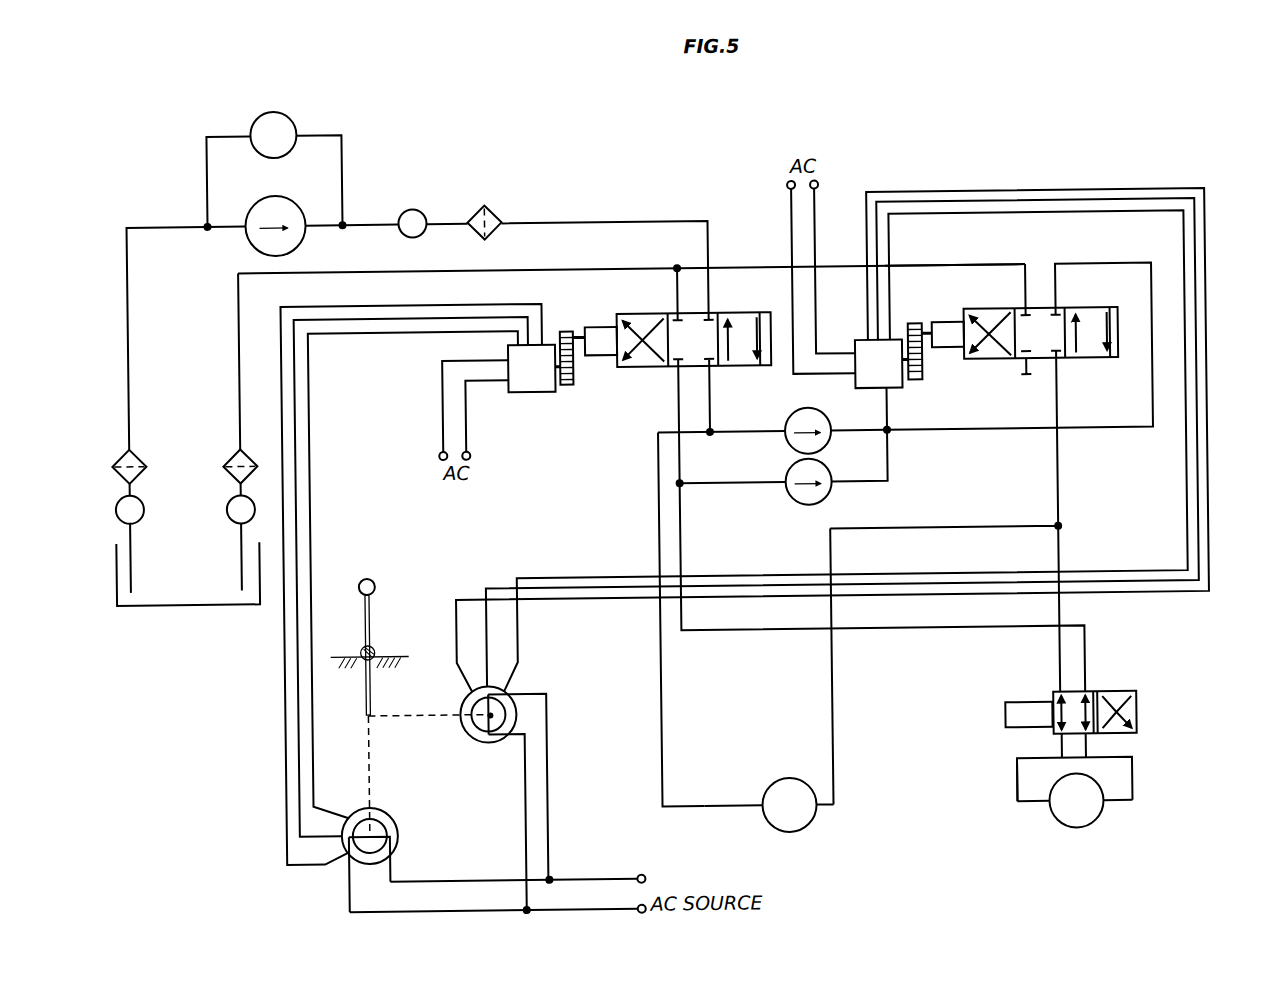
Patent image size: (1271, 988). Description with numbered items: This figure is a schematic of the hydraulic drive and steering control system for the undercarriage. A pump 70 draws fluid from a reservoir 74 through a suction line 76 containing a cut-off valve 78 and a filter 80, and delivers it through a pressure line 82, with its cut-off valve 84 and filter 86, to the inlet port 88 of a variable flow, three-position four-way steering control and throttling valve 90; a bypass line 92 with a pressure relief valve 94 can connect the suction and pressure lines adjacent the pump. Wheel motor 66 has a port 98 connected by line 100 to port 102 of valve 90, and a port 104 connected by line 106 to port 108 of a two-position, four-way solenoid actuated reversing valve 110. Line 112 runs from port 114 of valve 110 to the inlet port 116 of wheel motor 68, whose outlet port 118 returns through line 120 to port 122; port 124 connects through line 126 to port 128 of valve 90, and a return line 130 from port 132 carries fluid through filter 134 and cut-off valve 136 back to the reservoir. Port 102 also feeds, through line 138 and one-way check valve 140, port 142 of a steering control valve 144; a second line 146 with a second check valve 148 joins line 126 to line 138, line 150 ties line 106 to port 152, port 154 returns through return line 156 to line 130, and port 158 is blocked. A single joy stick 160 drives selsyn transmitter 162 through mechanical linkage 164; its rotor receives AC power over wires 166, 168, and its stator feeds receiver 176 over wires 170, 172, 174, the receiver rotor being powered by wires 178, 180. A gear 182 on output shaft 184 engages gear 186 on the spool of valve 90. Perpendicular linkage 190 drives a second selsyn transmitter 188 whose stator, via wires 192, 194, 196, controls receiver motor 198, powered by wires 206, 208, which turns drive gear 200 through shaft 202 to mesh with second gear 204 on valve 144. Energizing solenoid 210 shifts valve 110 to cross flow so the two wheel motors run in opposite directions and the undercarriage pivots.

The wheel motor 66 is at (787, 834).
The wheel motor 68 is at (1074, 832).
The pump 70 is at (286, 200).
The reservoir 74 is at (115, 573).
The suction line 76 is at (130, 325).
The cut-off valve 78 is at (115, 504).
The filter 80 is at (113, 459).
The pressure line 82 is at (582, 221).
The cut-off valve 84 is at (418, 206).
The filter 86 is at (492, 205).
The inlet port 88 is at (711, 312).
The steering control and throttling valve 90 is at (746, 313).
The bypass line 92 is at (210, 158).
The pressure relief valve 94 is at (288, 111).
The port 98 is at (763, 818).
The line 100 is at (660, 740).
The port 102 is at (712, 367).
The port 104 is at (808, 820).
The line 106 is at (830, 740).
The port 108 is at (1052, 694).
The reversing valve 110 is at (1134, 713).
The line 112 is at (1013, 787).
The port 114 is at (1056, 741).
The inlet port 116 is at (1049, 813).
The outlet port 118 is at (1096, 814).
The line 120 is at (1130, 780).
The port 122 is at (1085, 741).
The port 124 is at (1084, 694).
The line 126 is at (1083, 651).
The port 128 is at (670, 367).
The return line 130 is at (365, 269).
The port 132 is at (668, 312).
The filter 134 is at (234, 447).
The cut-off valve 136 is at (226, 505).
The line 138 is at (762, 431).
The one-way check valve 140 is at (827, 419).
The port 142 is at (1059, 312).
The steering control valve 144 is at (1042, 310).
The second line 146 is at (764, 485).
The second one-way check valve 148 is at (828, 498).
The line 150 is at (1058, 461).
The port 152 is at (1062, 366).
The port 154 is at (1026, 312).
The return line 156 is at (989, 268).
The port 158 is at (1027, 371).
The joy stick 160 is at (369, 613).
The selsyn transmitter 162 is at (393, 831).
The mechanical linkage 164 is at (363, 738).
The wire 166 is at (608, 876).
The wire 168 is at (598, 909).
The wire 170 is at (310, 528).
The wire 172 is at (296, 509).
The wire 174 is at (283, 482).
The selsyn receiver 176 is at (530, 386).
The wire 178 is at (441, 432).
The wire 180 is at (469, 421).
The gear 182 is at (575, 373).
The output shaft 184 is at (558, 386).
The gear 186 is at (566, 330).
The second selsyn transmitter 188 is at (478, 742).
The linkage 190 is at (431, 711).
The wire 192 is at (1187, 391).
The wire 194 is at (1198, 415).
The wire 196 is at (1208, 441).
The selsyn receiver motor 198 is at (856, 381).
The drive gear 200 is at (923, 375).
The shaft 202 is at (905, 386).
The second gear 204 is at (917, 325).
The wire 206 is at (820, 198).
The wire 208 is at (792, 206).
The solenoid 210 is at (1002, 718).